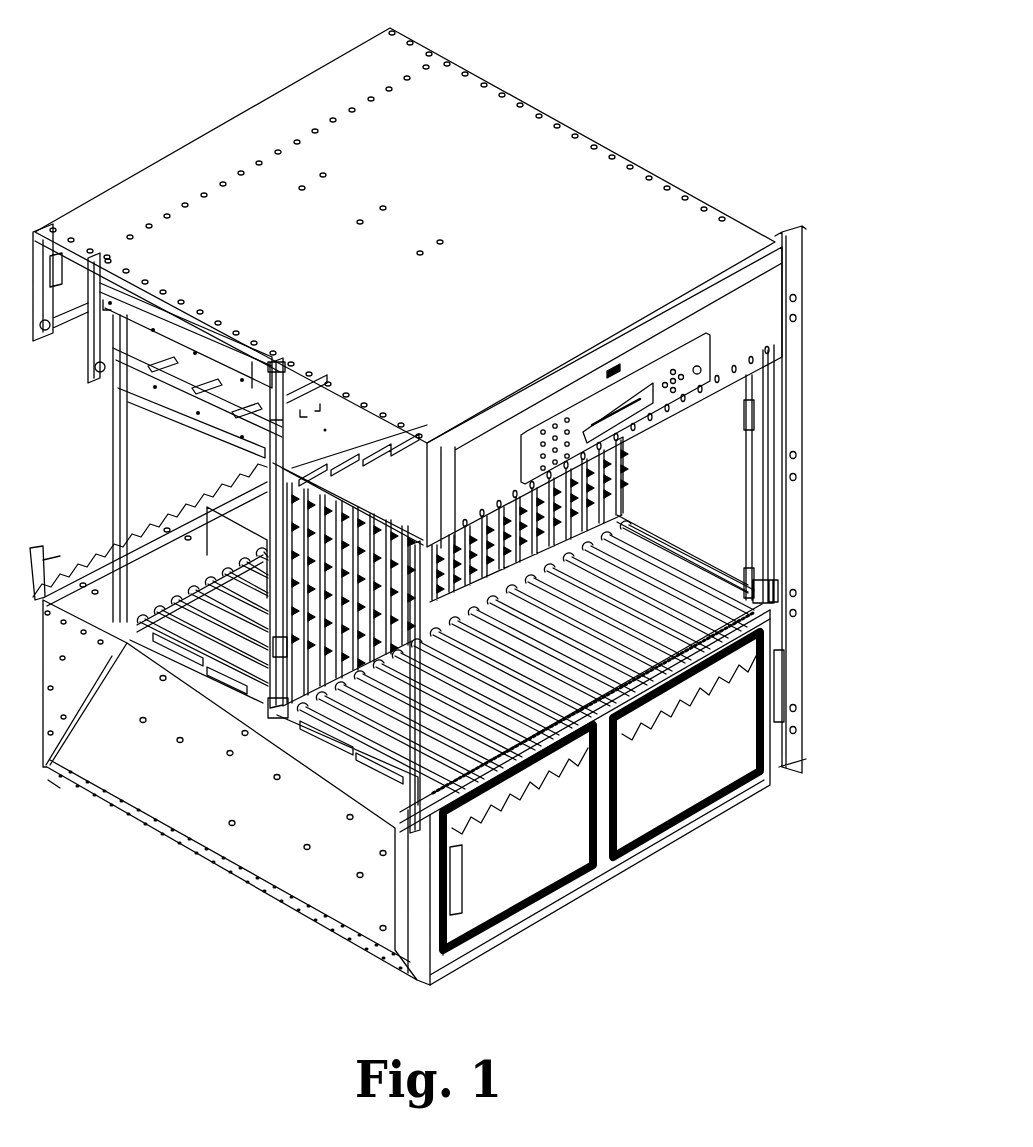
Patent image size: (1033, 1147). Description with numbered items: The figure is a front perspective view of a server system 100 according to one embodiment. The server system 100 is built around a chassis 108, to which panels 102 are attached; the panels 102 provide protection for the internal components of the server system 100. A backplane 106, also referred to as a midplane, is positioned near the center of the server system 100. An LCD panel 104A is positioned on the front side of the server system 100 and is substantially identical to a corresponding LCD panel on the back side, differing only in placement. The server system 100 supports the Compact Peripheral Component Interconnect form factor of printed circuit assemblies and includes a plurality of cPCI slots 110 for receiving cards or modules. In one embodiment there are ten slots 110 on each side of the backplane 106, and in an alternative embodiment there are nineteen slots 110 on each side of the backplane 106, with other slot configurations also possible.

The server system 100 is at (186, 82).
The panels 102 is at (512, 140).
The LCD panel 104A is at (697, 353).
The backplane 106 is at (613, 483).
The chassis 108 is at (680, 550).
The cPCI slots 110 is at (610, 583).